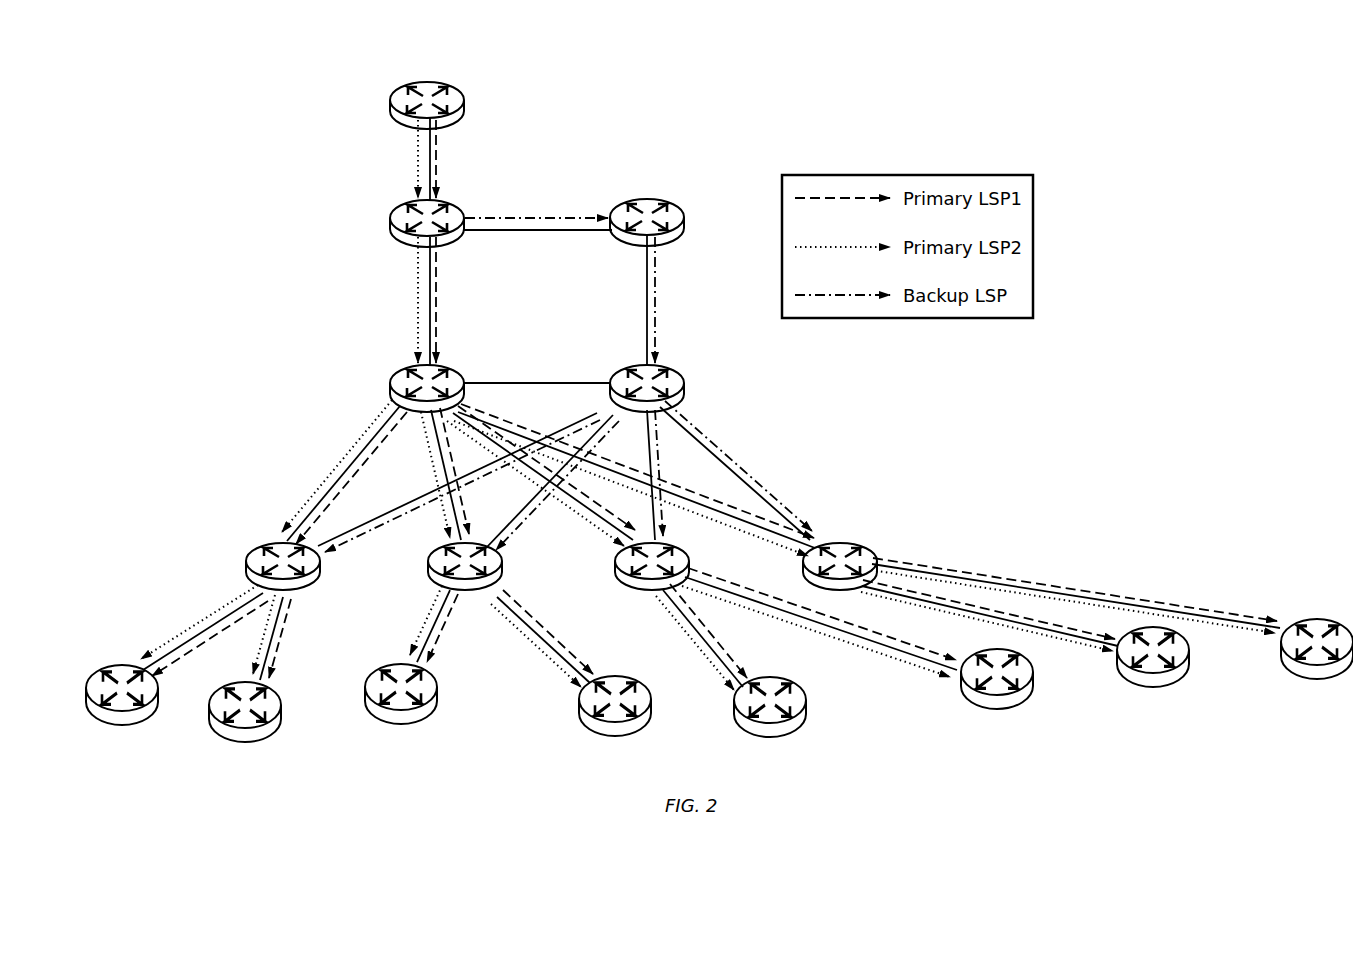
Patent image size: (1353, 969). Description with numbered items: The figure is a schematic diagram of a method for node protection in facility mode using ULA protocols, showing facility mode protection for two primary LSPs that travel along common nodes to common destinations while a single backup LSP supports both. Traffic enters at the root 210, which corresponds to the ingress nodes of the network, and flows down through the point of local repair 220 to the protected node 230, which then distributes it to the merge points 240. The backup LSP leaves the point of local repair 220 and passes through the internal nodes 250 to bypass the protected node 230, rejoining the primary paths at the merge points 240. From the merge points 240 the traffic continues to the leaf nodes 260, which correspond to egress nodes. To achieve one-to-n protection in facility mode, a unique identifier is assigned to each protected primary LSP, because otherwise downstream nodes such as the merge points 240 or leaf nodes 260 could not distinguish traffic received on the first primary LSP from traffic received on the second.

The root 210 is at (389, 99).
The point of local repair (PLR) 220 is at (389, 217).
The protected node 230 is at (389, 382).
The merge points (MPs) 240 is at (247, 552).
The internal nodes 250 is at (684, 216).
The leaf nodes 260 is at (90, 670).